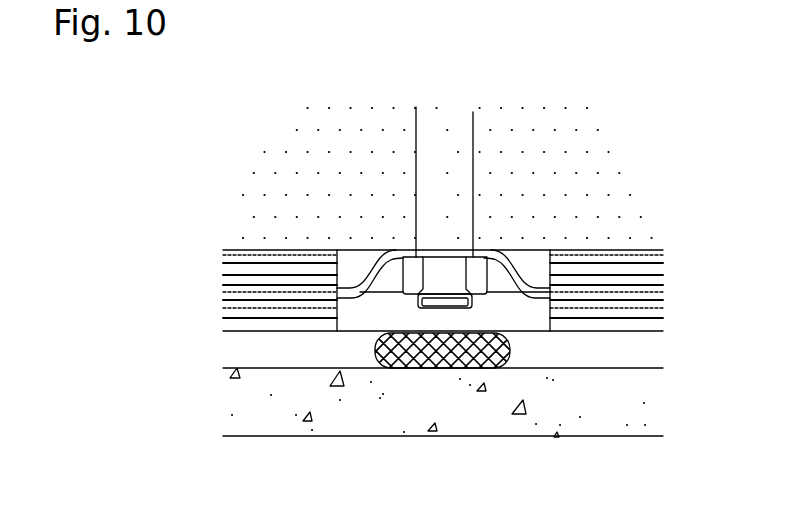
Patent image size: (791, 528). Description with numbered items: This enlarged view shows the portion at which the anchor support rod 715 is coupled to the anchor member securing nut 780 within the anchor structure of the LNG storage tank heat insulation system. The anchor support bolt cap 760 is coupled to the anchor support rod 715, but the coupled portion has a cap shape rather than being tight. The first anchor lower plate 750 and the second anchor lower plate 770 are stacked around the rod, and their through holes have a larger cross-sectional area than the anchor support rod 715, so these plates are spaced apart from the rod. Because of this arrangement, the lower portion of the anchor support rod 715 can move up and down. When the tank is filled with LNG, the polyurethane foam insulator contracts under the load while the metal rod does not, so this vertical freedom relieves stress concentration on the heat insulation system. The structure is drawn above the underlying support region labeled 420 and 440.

The anchor support rod 715 is at (465, 151).
The first anchor lower plate 750 is at (645, 271).
The anchor support bolt cap 760 is at (503, 250).
The second anchor lower plate 770 is at (645, 315).
The anchor member securing nut 780 is at (482, 278).
The base 420 is at (443, 433).
The base 440 is at (370, 413).